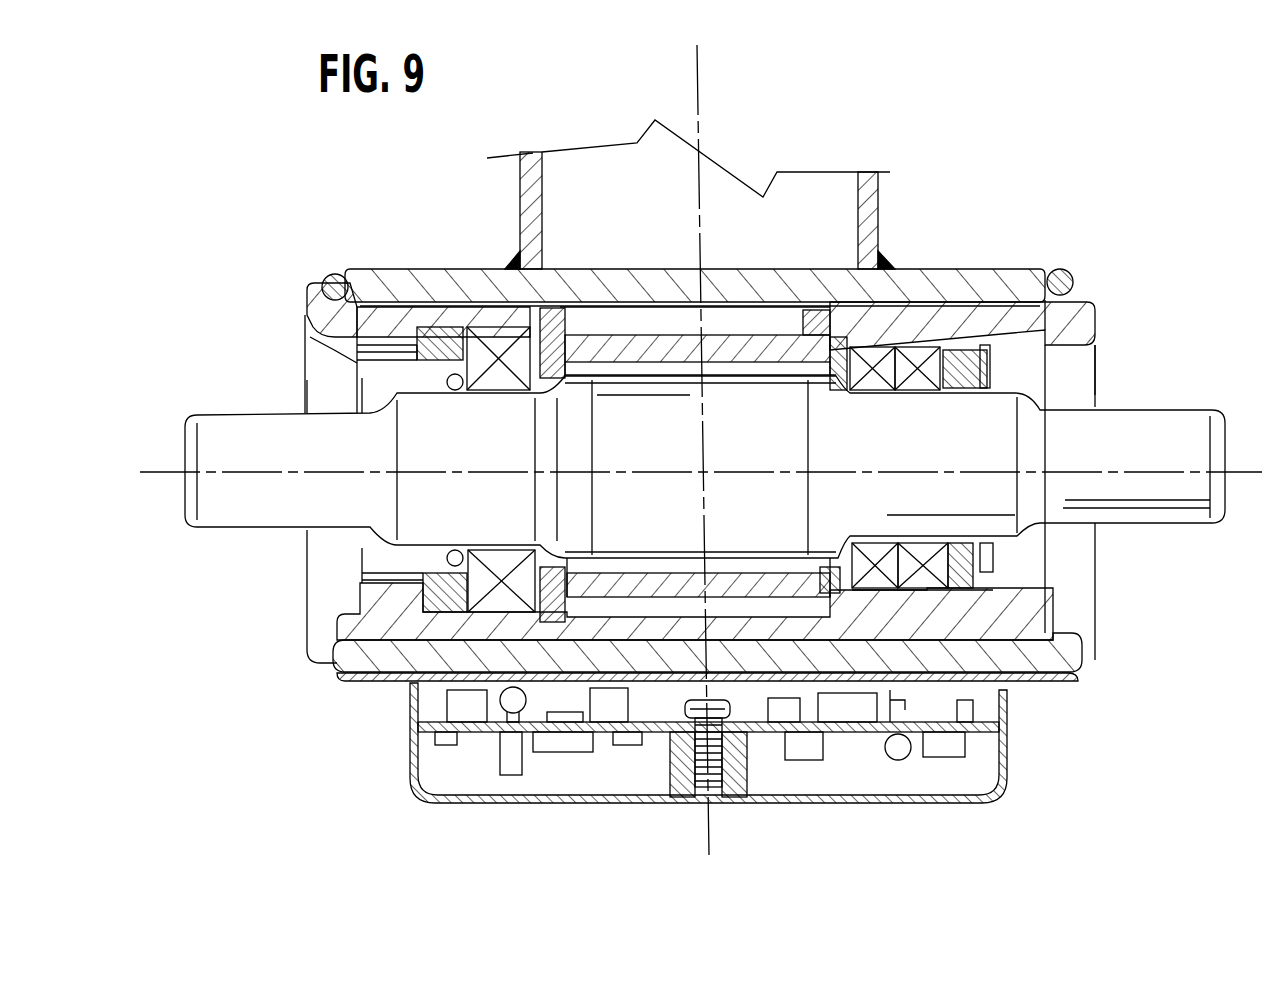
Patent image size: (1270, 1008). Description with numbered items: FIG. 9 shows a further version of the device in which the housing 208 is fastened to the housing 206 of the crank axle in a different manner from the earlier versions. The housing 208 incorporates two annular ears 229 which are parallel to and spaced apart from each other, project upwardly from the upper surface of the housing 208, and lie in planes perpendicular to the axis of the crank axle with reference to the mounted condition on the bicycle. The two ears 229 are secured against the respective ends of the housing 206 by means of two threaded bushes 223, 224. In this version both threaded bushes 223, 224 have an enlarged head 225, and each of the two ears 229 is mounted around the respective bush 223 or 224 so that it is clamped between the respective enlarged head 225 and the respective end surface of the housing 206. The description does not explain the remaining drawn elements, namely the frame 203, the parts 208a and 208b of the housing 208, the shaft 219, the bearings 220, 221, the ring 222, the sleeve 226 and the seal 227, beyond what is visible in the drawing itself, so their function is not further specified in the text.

The frame 203 is at (883, 200).
The housing 206 is at (1005, 265).
The housing 208 is at (1018, 737).
The circuit board 208a is at (406, 703).
The housing cover 208b is at (406, 771).
The shaft 219 is at (1152, 405).
The first bearing 220 is at (470, 357).
The second bearing 221 is at (918, 348).
The spacer ring 222 is at (873, 343).
The threaded bush 223 is at (1066, 321).
The threaded bush 224 is at (320, 330).
The enlarged head 225 is at (310, 280).
The spacer sleeve 226 is at (632, 347).
The seal 227 is at (357, 337).
The annular ear 229 is at (331, 274).